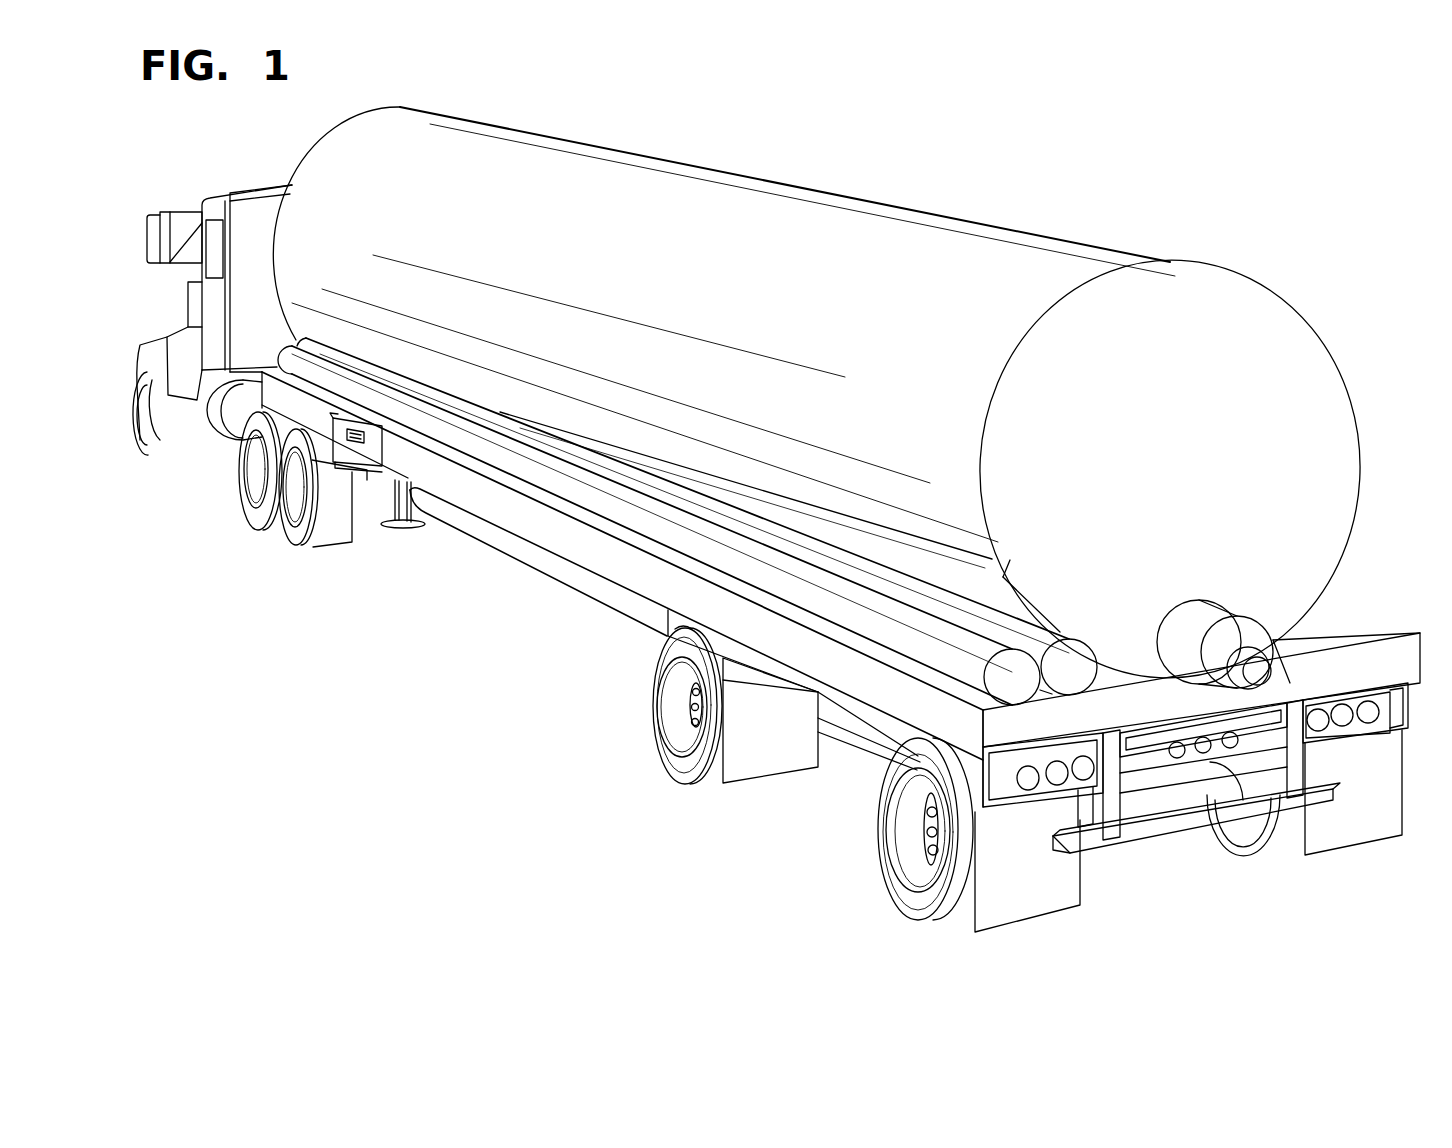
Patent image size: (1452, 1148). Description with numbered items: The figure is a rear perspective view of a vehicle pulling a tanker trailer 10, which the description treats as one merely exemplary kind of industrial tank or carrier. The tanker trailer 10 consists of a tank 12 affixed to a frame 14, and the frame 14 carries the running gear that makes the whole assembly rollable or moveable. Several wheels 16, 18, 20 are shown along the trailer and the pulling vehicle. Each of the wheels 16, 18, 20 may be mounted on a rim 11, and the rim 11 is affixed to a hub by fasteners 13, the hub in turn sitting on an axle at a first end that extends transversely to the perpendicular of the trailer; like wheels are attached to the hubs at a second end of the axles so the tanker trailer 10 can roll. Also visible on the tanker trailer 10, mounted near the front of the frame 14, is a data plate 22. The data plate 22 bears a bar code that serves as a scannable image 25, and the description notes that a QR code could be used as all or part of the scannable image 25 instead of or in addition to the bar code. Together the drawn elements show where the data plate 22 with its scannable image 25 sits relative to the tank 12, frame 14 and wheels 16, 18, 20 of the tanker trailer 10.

The tanker trailer 10 is at (987, 171).
The rim 11 is at (930, 845).
The tank 12 is at (779, 301).
The fastener 13 is at (694, 708).
The frame 14 is at (585, 550).
The wheel 16 is at (905, 915).
The wheel 18 is at (677, 779).
The wheel 20 is at (311, 550).
The data plate 22 is at (373, 458).
The scannable image 25 is at (344, 437).